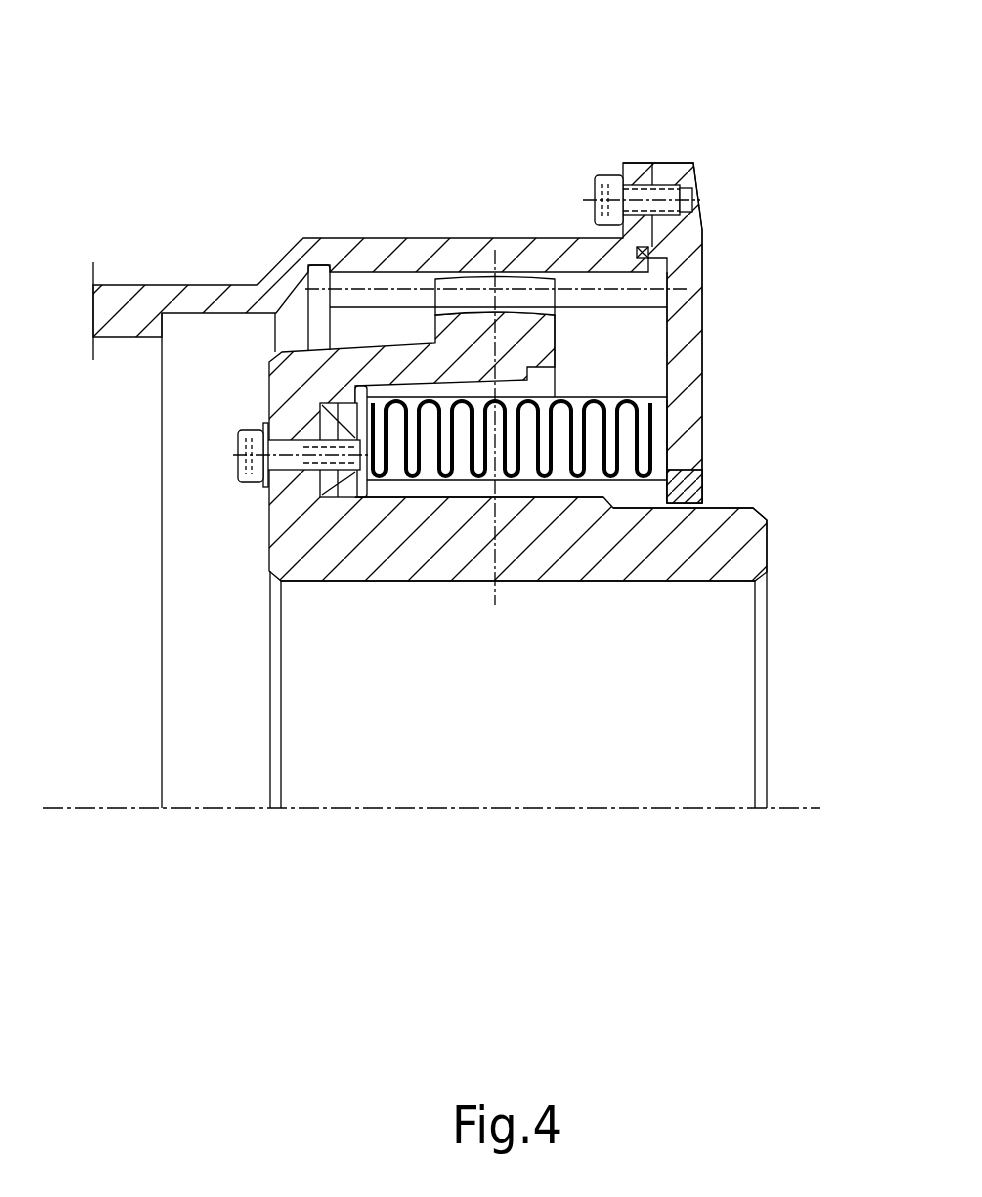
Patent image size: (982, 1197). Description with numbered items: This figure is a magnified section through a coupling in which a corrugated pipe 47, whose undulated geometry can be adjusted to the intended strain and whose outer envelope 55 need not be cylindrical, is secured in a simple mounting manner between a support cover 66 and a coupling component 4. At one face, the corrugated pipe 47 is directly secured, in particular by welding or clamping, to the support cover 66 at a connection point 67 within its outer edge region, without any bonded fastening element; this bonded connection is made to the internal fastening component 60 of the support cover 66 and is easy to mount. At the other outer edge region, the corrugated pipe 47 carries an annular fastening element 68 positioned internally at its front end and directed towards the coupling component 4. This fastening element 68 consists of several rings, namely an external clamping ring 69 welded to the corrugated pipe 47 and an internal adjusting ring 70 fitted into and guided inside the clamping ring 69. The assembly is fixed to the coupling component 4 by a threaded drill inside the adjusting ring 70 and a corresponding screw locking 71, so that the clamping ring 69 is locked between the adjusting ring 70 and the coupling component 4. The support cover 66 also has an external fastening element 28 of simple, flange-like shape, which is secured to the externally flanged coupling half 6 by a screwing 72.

The coupling component 4 is at (648, 558).
The externally flanged coupling half 6 is at (415, 253).
The external fastening element 28 is at (700, 215).
The corrugated pipe 47 is at (553, 480).
The outer envelope 55 is at (592, 397).
The internal fastening component 60 is at (695, 465).
The support cover 66 is at (687, 322).
The connection point 67 is at (670, 470).
The annular fastening element 68 is at (350, 496).
The external clamping ring 69 is at (327, 413).
The internal adjusting ring 70 is at (343, 478).
The screw locking 71 is at (253, 473).
The screwing 72 is at (648, 147).